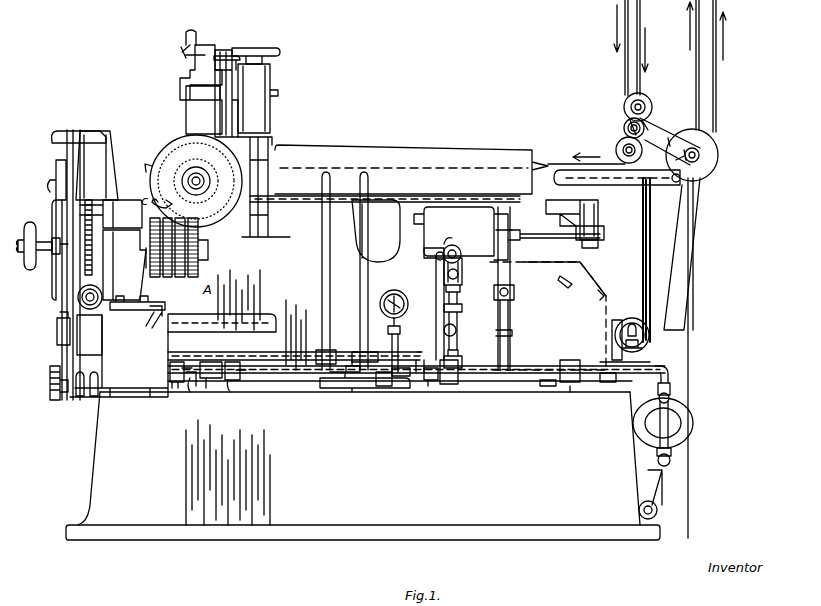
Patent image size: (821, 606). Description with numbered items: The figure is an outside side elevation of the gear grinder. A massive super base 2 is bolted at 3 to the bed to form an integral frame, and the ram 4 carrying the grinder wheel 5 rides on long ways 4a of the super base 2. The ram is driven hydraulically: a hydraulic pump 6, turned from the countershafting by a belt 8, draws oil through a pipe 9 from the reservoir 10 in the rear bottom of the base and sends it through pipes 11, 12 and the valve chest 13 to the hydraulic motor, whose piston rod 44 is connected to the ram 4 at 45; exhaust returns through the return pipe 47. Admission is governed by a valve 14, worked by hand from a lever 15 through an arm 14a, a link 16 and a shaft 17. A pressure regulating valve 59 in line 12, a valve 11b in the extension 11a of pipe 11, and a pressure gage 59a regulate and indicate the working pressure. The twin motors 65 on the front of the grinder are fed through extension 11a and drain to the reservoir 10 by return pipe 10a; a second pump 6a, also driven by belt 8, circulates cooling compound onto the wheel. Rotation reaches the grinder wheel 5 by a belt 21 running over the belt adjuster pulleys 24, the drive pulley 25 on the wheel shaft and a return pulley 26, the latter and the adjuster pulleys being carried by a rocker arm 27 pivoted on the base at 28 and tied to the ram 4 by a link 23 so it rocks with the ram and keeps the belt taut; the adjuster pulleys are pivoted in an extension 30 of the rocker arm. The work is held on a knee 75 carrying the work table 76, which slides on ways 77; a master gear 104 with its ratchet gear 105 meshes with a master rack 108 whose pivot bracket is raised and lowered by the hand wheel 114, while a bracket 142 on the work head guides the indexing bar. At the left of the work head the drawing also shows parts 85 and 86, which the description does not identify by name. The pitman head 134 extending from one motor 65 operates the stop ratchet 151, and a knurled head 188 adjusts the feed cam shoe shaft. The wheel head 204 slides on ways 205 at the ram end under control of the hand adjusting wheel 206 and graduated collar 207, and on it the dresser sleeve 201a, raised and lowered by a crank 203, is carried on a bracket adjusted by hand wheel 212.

The super base 2 is at (334, 271).
The bolting 3 is at (346, 380).
The ram 4 is at (436, 138).
The ways 4a is at (308, 204).
The grinder wheel 5 is at (195, 179).
The hydraulic pump 6 is at (692, 420).
The pump 6a is at (648, 330).
The belt 8 is at (643, 210).
The pipe 9 is at (608, 352).
The reservoir 10 is at (578, 296).
The return pipe 10a is at (428, 380).
The pipe 11 is at (586, 376).
The extension of pipe 11 11a is at (452, 396).
The valve 11b is at (230, 384).
The pipe 12 is at (454, 294).
The valve chest 13 is at (507, 233).
The valve 14 is at (456, 248).
The arm 14a is at (424, 242).
The lever 15 is at (370, 260).
The link 16 is at (434, 290).
The shaft 17 is at (410, 354).
The belt 21 is at (562, 154).
The link 23 is at (658, 182).
The belt adjuster pulleys 24 is at (628, 102).
The drive pulley 25 is at (154, 175).
The return pulley 26 is at (720, 155).
The rocker arm 27 is at (697, 220).
The pivot 28 is at (660, 510).
The extension of rocker arm 30 is at (668, 126).
The piston rod 44 is at (554, 230).
The connection 45 is at (592, 244).
The return pipe 47 is at (512, 276).
The pressure regulating valve 59 is at (460, 328).
The pressure gage 59a is at (380, 302).
The twin motors 65 is at (89, 335).
The knee 75 is at (121, 356).
The work table 76 is at (160, 304).
The ways 77 is at (150, 322).
The shaft 85 is at (40, 266).
The handwheel 86 is at (28, 230).
The master gear 104 is at (96, 256).
The ratchet gear 105 is at (54, 184).
The master rack 108 is at (94, 210).
The hand wheel 114 is at (58, 130).
The pitman head 134 is at (60, 320).
The bracket 142 is at (102, 166).
The ratchet 151 is at (50, 400).
The knurled head 188 is at (102, 297).
The rotatable sleeve 201a is at (188, 94).
The crank 203 is at (195, 40).
The wheel head 204 is at (242, 146).
The ways 205 is at (258, 158).
The hand adjusting wheel 206 is at (278, 52).
The graduated collar 207 is at (272, 76).
The hand wheel 212 is at (228, 56).